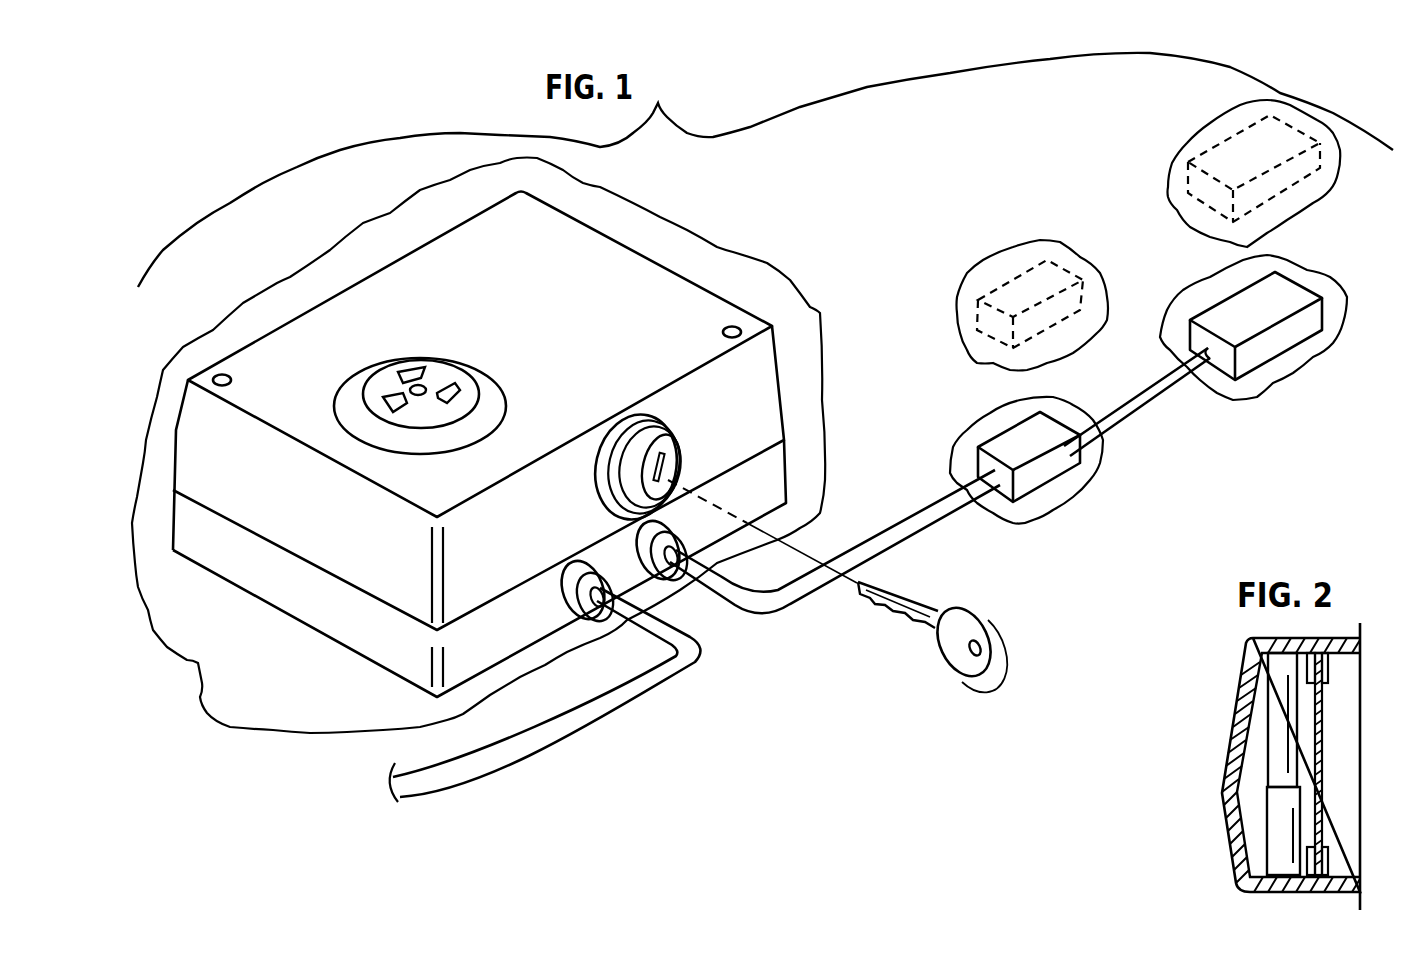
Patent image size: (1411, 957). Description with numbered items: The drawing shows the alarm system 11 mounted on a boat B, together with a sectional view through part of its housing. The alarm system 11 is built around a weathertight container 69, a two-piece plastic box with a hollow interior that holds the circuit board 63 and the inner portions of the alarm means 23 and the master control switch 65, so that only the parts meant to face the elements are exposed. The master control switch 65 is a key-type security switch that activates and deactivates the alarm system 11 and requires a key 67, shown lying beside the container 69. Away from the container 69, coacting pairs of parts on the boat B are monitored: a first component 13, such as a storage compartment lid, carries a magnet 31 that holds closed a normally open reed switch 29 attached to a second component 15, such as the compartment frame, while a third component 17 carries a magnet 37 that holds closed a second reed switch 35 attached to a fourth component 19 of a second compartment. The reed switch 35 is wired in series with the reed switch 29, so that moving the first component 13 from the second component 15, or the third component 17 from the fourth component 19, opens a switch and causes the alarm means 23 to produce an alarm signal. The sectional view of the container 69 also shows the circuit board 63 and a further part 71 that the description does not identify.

In FIG. 1, the alarm system 11 is at (364, 863).
In FIG. 1, the first component 13 is at (997, 272).
In FIG. 1, the second component 15 is at (1122, 495).
In FIG. 1, the third component 17 is at (1177, 182).
In FIG. 1, the fourth component 19 is at (1303, 355).
In FIG. 1, the alarm means 23 is at (378, 383).
In FIG. 1, the reed switch 29 is at (1010, 442).
In FIG. 1, the magnet 31 is at (965, 350).
In FIG. 1, the reed switch 35 is at (1310, 318).
In FIG. 1, the magnet 37 is at (1330, 203).
In FIG. 2, the circuit board 63 is at (1323, 718).
In FIG. 1, the master control switch 65 is at (670, 452).
In FIG. 1, the key 67 is at (947, 640).
In FIG. 1, the weathertight container 69 is at (677, 302).
In FIG. 2, the weathertight container 69 is at (1238, 743).
In FIG. 2, the housing interior 71 is at (1337, 823).
In FIG. 1, the boat B is at (282, 710).